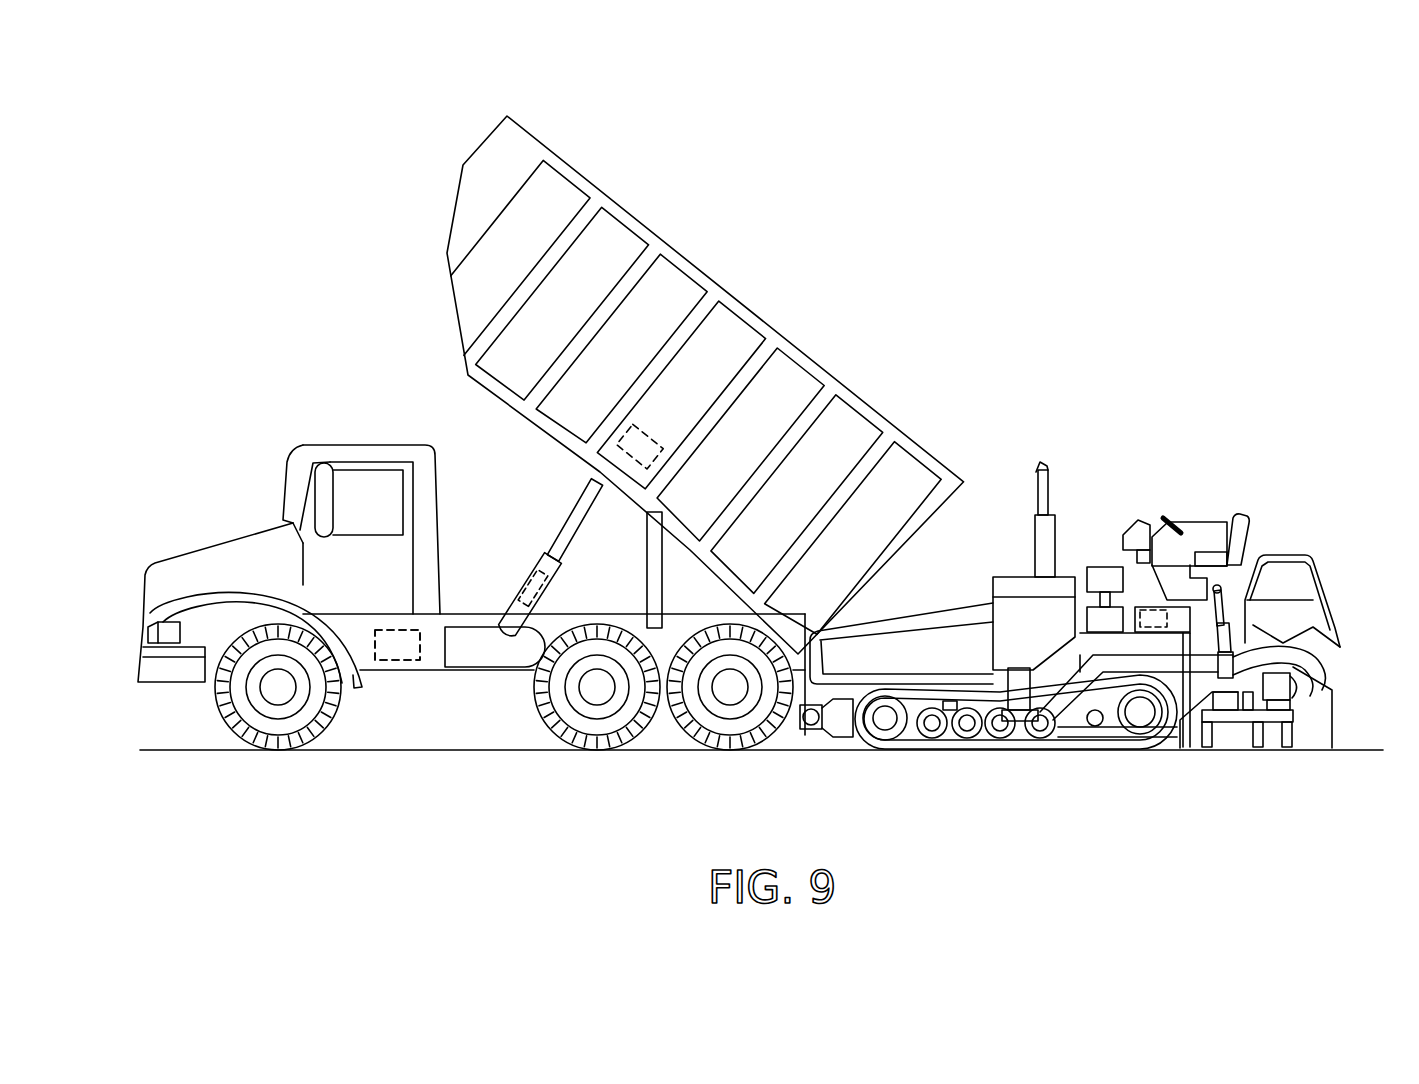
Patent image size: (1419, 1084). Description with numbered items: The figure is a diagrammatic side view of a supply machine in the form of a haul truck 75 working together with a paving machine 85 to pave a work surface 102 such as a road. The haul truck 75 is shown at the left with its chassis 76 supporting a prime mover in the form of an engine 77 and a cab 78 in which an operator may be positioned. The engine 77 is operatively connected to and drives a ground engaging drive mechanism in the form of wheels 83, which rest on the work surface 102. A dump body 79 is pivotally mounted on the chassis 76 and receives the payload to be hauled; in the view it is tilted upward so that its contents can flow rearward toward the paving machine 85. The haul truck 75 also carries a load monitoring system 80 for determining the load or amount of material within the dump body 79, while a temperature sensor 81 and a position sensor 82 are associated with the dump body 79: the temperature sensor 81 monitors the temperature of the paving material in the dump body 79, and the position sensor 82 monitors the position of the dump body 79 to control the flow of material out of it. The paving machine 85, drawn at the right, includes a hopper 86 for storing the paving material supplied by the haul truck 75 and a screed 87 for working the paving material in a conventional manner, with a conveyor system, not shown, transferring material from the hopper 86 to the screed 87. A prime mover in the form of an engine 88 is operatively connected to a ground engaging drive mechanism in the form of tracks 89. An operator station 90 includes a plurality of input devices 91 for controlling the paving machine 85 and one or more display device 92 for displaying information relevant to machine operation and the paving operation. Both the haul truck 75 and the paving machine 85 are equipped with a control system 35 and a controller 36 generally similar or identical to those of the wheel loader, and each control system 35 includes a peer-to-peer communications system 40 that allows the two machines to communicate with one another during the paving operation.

The haul truck 75 is at (242, 385).
The control system 35 is at (293, 405).
The peer-to-peer communications system 40 is at (363, 405).
The controller 36 is at (418, 637).
The chassis 76 is at (397, 662).
The engine 77 is at (248, 572).
The cab 78 is at (355, 452).
The dump body 79 is at (623, 247).
The load monitoring system 80 is at (426, 405).
The temperature sensor 81 is at (616, 452).
The position sensor 82 is at (536, 562).
The wheels 83 is at (680, 742).
The paving machine 85 is at (1281, 394).
The hopper 86 is at (927, 650).
The screed 87 is at (1313, 706).
The engine 88 is at (1011, 585).
The tracks 89 is at (1007, 757).
The operator station 90 is at (1235, 448).
The input devices 91 is at (1163, 524).
The display device 92 is at (1148, 518).
The work surface 102 is at (457, 737).